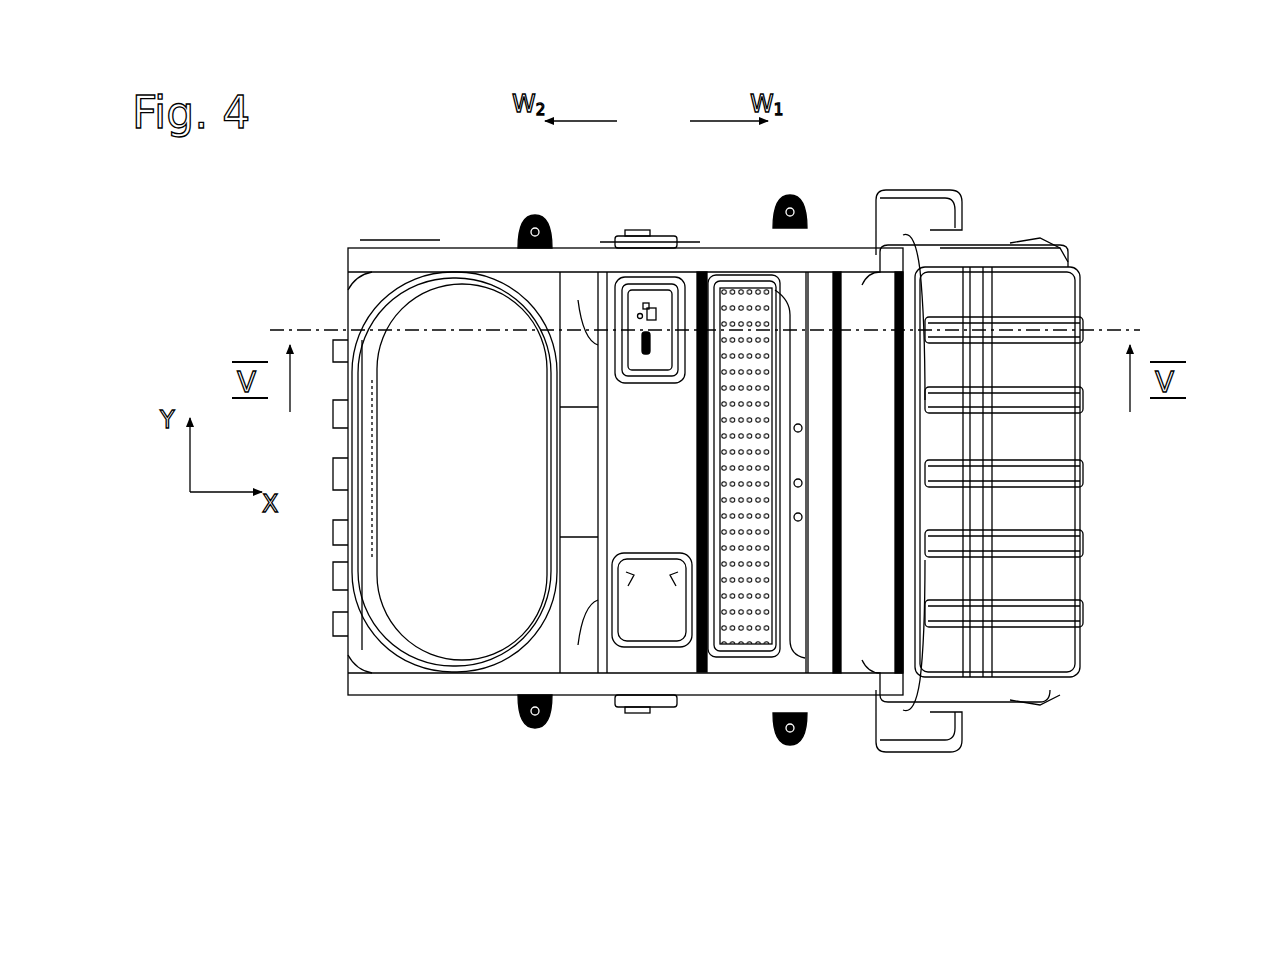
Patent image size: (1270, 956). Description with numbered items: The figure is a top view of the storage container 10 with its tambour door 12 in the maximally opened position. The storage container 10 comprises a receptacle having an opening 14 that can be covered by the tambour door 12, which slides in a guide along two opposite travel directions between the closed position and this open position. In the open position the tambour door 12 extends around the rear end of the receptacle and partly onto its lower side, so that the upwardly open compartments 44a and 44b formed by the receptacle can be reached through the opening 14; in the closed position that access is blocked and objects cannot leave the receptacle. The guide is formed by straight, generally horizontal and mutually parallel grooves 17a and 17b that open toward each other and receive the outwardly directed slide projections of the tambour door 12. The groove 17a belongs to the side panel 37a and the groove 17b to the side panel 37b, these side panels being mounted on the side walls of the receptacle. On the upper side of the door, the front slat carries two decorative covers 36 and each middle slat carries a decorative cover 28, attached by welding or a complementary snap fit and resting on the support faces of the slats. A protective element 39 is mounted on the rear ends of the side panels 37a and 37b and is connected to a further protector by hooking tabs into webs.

The storage container 10 is at (1180, 145).
The tambour door 12 is at (858, 300).
The opening 14 is at (462, 308).
The groove 17a is at (383, 277).
The groove 17b is at (378, 668).
The decorative cover 28 is at (879, 296).
The decorative cover 36 is at (806, 298).
The side panel 37a is at (706, 268).
The side panel 37b is at (680, 682).
The protective element 39 is at (1055, 508).
The compartment 44a is at (437, 604).
The compartment 44b is at (732, 632).